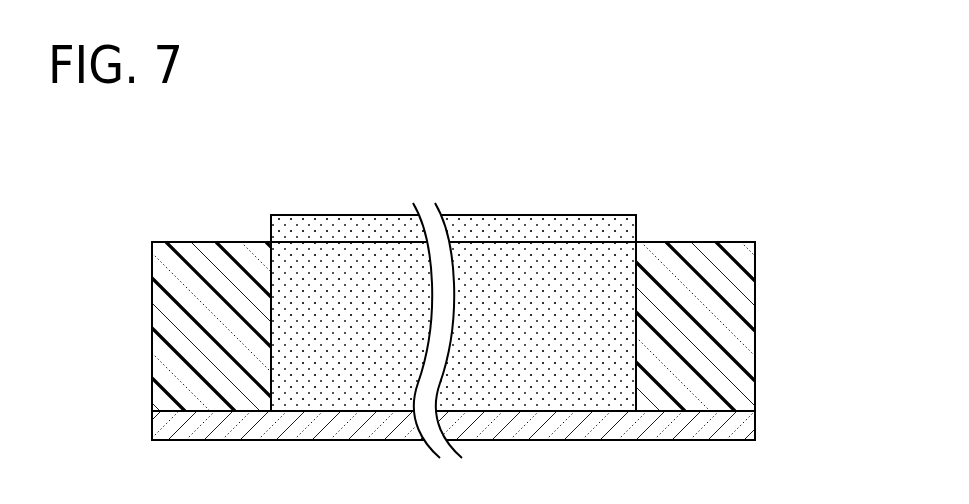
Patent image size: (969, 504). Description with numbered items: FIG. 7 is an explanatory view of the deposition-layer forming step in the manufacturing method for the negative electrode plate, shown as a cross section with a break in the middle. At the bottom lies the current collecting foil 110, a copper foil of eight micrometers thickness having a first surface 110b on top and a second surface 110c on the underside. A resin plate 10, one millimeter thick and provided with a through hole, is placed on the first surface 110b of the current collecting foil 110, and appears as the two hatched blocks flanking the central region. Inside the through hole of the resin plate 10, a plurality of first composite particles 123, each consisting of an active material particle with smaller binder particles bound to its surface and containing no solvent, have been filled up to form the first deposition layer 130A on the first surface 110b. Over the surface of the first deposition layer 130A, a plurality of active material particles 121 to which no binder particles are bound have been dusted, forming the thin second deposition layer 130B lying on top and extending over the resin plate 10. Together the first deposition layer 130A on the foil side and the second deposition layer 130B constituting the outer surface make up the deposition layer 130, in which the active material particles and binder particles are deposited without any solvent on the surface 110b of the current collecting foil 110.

The resin plate 10 is at (755, 315).
The current collecting foil 110 is at (755, 417).
The first surface 110b is at (723, 407).
The second surface 110c is at (717, 443).
The deposition layer 130 is at (458, 244).
The first deposition layer 130A is at (455, 265).
The first composite particle 123 is at (585, 288).
The second deposition layer 130B is at (453, 181).
The active material particle 121 is at (645, 140).